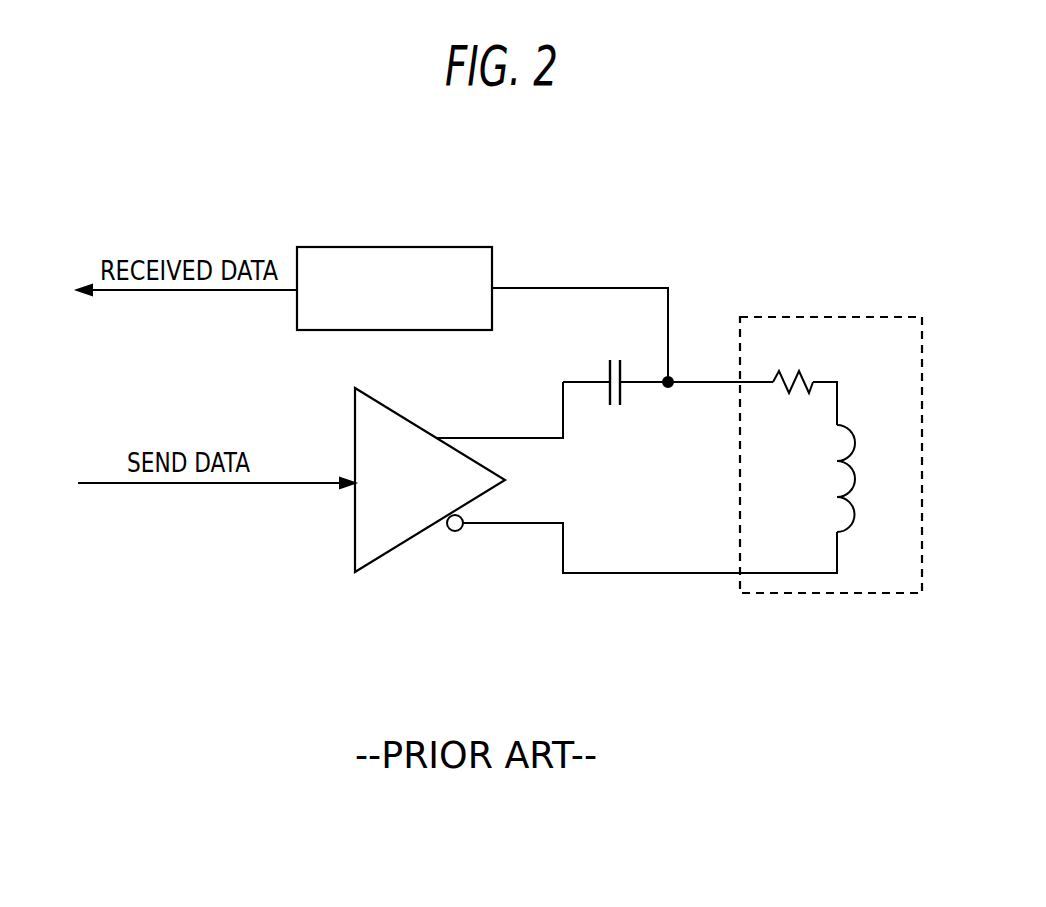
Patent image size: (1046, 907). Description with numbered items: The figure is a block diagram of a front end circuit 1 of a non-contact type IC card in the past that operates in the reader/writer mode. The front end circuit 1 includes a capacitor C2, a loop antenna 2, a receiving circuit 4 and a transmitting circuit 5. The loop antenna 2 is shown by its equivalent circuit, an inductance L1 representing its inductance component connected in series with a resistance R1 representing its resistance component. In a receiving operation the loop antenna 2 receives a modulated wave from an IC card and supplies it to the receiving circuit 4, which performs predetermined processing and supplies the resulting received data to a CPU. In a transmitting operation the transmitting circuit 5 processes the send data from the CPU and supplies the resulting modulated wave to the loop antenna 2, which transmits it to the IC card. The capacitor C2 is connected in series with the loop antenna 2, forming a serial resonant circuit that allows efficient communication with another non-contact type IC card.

The front end circuit 1 is at (742, 245).
The loop antenna 2 is at (832, 317).
The receiving circuit 4 is at (397, 247).
The transmitting circuit 5 is at (412, 418).
The capacitor C2 is at (617, 410).
The resistance R1 is at (795, 395).
The inductance L1 is at (855, 428).